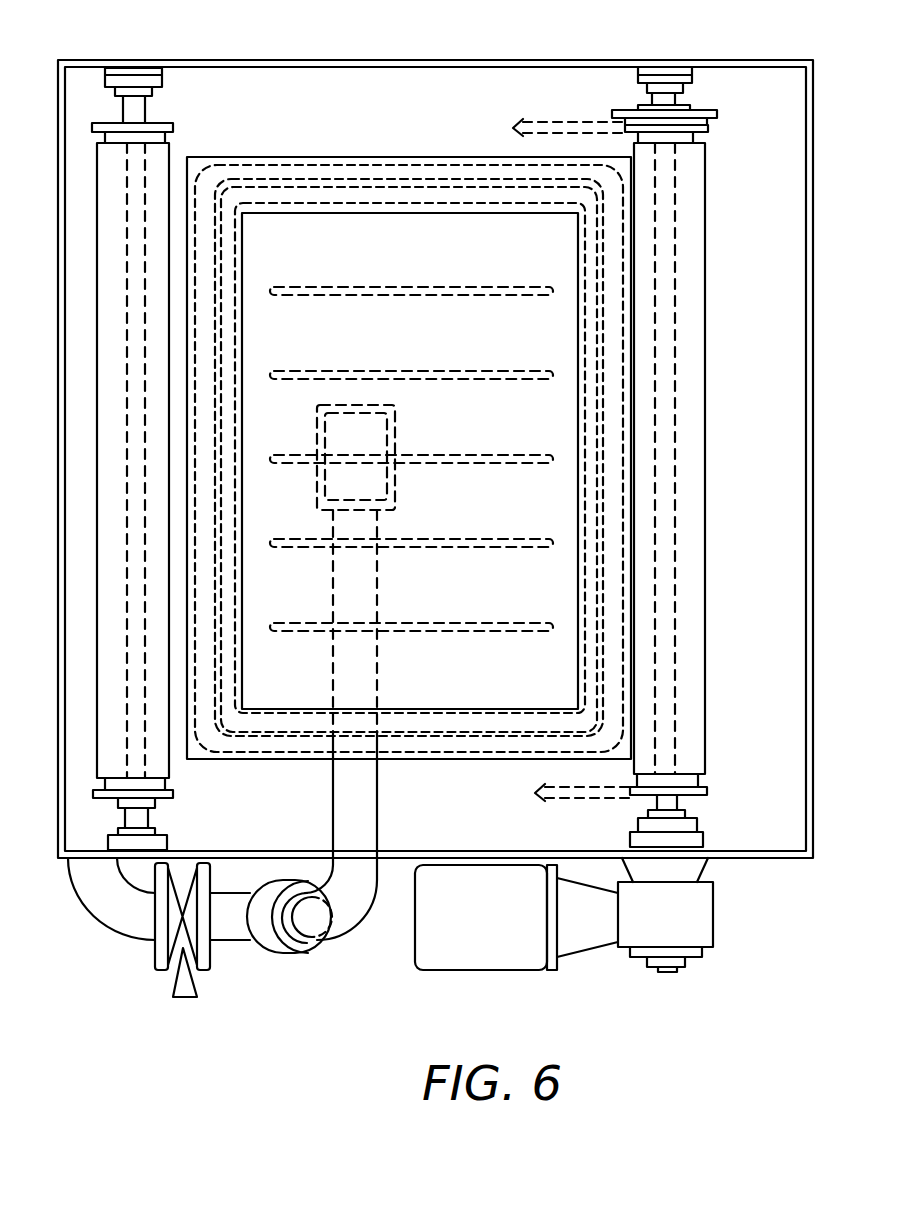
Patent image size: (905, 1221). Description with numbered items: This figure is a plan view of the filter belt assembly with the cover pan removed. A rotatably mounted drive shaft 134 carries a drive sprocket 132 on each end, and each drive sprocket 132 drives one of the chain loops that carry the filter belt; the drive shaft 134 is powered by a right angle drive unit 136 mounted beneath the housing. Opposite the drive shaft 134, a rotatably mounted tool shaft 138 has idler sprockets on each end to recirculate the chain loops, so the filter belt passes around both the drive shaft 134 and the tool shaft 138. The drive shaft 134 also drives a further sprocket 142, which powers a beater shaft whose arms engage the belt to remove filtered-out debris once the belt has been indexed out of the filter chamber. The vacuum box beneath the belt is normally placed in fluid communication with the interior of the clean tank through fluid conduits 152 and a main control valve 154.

The drive sprocket 132 is at (708, 130).
The drive shaft 134 is at (705, 565).
The right angle drive unit 136 is at (582, 955).
The tool shaft 138 is at (97, 482).
The sprocket 142 is at (622, 113).
The fluid conduits 152 is at (122, 937).
The main control valve 154 is at (57, 685).